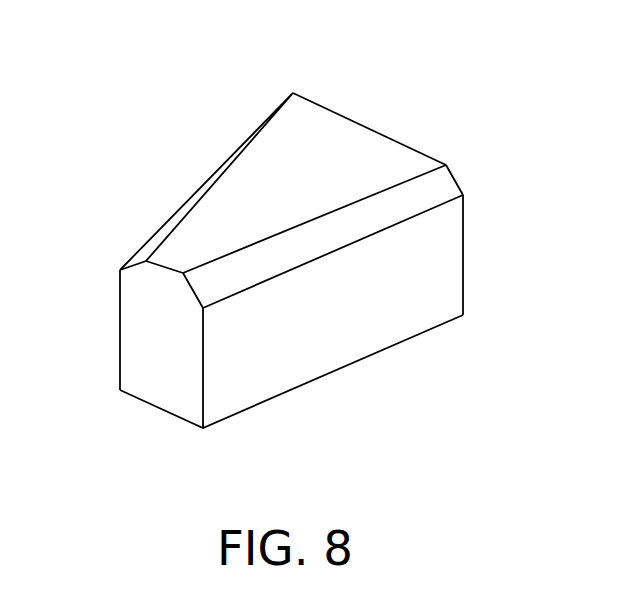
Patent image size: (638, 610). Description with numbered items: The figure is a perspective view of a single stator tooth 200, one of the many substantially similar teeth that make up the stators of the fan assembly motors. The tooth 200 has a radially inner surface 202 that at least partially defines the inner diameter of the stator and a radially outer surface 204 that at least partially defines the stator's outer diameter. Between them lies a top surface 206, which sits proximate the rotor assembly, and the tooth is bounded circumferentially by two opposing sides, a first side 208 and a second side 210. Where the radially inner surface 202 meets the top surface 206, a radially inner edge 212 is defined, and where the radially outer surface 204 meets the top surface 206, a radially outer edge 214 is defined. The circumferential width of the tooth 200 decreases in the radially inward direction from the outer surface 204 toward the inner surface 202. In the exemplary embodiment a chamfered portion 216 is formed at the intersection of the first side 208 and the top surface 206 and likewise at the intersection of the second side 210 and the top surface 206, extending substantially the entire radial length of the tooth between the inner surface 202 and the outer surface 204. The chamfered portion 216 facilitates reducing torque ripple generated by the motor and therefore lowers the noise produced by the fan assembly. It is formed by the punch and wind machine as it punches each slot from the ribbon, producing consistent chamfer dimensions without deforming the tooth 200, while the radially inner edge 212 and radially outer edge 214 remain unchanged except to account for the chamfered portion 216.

The stator tooth 200 is at (446, 112).
The radially inner surface 202 is at (160, 372).
The radially outer surface 204 is at (476, 287).
The top surface 206 is at (262, 203).
The first side 208 is at (120, 315).
The second side 210 is at (345, 323).
The radially inner edge 212 is at (172, 262).
The radially outer edge 214 is at (326, 107).
The chamfered portion 216 is at (145, 258).